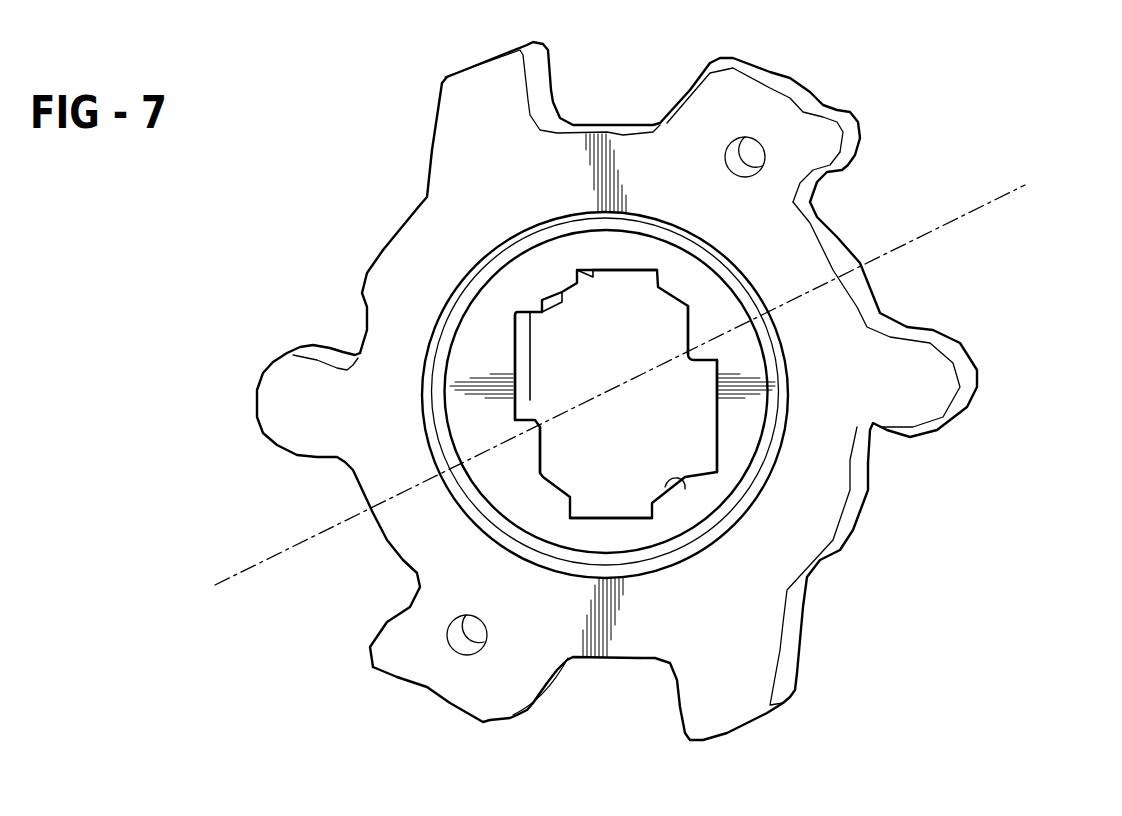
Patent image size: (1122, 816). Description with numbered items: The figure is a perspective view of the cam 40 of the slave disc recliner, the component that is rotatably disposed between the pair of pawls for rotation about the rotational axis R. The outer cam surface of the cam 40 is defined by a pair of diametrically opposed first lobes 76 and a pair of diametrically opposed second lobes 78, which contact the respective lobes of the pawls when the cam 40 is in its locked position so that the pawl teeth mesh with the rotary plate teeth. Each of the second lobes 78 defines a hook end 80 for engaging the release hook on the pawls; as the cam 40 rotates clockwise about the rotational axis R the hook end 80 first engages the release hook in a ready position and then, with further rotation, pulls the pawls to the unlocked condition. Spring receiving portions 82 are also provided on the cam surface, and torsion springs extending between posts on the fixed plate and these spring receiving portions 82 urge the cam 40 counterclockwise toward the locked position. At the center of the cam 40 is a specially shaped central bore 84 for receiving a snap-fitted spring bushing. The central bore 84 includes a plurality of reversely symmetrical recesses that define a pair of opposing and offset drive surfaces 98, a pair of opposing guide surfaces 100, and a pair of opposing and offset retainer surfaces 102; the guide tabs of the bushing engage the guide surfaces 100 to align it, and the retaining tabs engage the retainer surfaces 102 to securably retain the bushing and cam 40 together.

The cam 40 is at (400, 248).
The first lobes 76 is at (502, 52).
The second lobes 78 is at (780, 83).
The hook end 80 is at (842, 168).
The spring receiving portion 82 is at (967, 387).
The central bore 84 is at (683, 483).
The drive surfaces 98 is at (687, 323).
The guide surfaces 100 is at (635, 270).
The retainer surfaces 102 is at (522, 345).
The rotational axis R is at (247, 570).